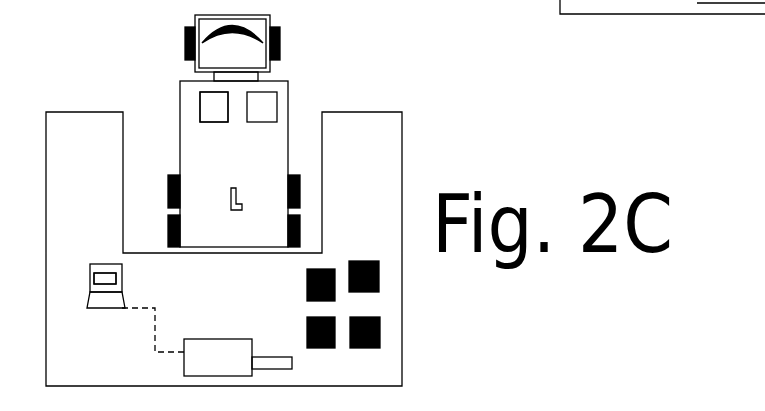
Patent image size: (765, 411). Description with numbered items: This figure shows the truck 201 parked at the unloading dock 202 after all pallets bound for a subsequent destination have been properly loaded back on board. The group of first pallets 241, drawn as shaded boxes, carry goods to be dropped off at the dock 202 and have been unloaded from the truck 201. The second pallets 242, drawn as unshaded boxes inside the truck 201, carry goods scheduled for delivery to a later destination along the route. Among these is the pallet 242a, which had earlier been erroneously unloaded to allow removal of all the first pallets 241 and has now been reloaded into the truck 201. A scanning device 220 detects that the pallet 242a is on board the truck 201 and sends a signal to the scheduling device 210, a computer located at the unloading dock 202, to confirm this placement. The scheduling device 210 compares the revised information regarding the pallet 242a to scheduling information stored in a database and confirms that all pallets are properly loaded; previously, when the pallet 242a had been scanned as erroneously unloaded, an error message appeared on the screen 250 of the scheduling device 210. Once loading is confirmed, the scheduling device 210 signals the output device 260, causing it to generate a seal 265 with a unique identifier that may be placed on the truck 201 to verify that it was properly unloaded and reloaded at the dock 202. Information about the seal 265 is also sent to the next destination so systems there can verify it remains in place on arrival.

The truck 201 is at (290, 98).
The unloading dock 202 is at (90, 122).
The second pallets 242 is at (226, 110).
The pallet 242a is at (214, 107).
The scanning device 220 is at (230, 209).
The scheduling device 210 is at (110, 311).
The screen 250 is at (108, 273).
The output device 260 is at (218, 357).
The seal 265 is at (265, 360).
The first pallets 241 is at (379, 275).